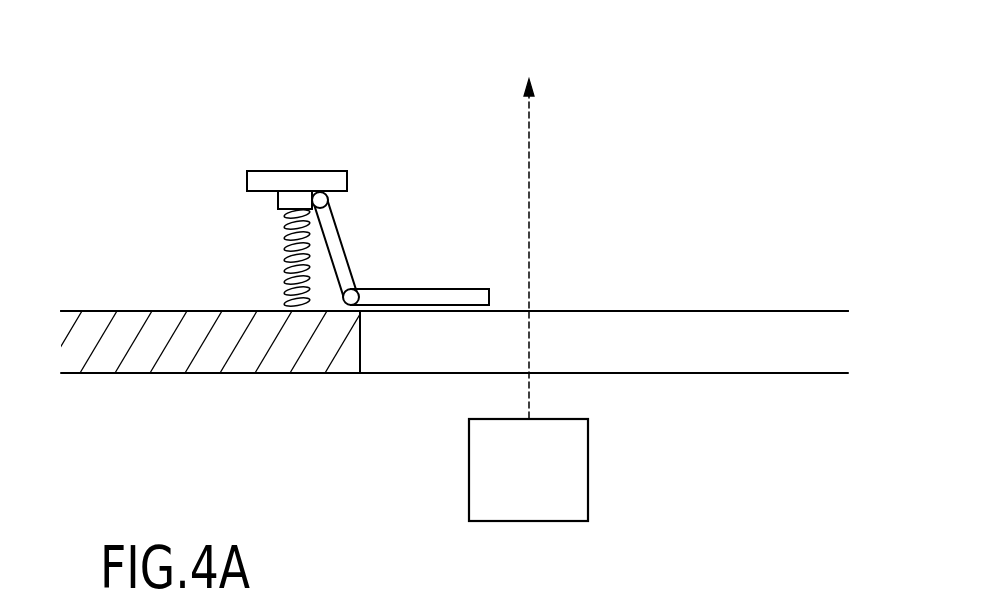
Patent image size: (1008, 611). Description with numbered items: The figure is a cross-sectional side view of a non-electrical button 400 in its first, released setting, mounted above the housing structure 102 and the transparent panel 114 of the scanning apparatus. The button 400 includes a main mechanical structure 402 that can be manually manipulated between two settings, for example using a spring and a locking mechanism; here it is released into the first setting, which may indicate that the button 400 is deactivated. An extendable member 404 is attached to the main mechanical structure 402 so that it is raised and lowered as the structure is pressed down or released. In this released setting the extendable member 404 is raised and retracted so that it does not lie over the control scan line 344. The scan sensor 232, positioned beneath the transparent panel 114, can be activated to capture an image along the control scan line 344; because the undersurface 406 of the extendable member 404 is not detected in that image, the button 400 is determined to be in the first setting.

The housing structure 102 is at (105, 311).
The transparent panel 114 is at (767, 311).
The scan sensor 232 is at (588, 478).
The control scan line 344 is at (531, 227).
The non-electrical button 400 is at (340, 202).
The main mechanical structure 402 is at (247, 182).
The extendable member 404 is at (395, 289).
The undersurface 406 is at (409, 305).